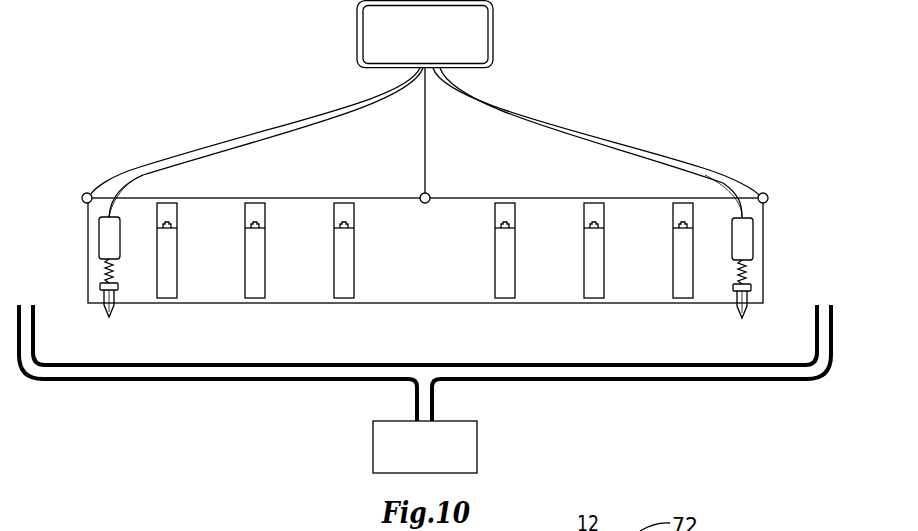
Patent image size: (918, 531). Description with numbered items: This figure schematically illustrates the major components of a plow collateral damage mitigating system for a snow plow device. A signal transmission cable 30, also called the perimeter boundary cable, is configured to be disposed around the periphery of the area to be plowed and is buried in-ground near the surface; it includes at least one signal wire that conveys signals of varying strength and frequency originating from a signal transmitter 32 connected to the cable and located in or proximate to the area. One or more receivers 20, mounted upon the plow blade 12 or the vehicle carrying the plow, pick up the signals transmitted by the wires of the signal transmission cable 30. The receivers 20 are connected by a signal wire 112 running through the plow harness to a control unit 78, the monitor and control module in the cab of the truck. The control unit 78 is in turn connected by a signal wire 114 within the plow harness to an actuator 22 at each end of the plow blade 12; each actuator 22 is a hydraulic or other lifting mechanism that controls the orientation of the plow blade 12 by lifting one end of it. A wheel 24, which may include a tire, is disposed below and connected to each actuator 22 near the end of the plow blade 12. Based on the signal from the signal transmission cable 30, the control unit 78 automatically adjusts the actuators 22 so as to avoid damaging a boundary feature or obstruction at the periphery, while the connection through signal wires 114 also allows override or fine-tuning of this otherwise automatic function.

The plow blade 12 is at (303, 220).
The receiver 20 is at (85, 192).
The actuator 22 is at (106, 240).
The wheel 24 is at (112, 318).
The signal transmission cable 30 is at (197, 373).
The signal transmitter 32 is at (463, 447).
The control unit 78 is at (470, 28).
The signal wire 112 is at (240, 137).
The signal wire 114 is at (143, 175).